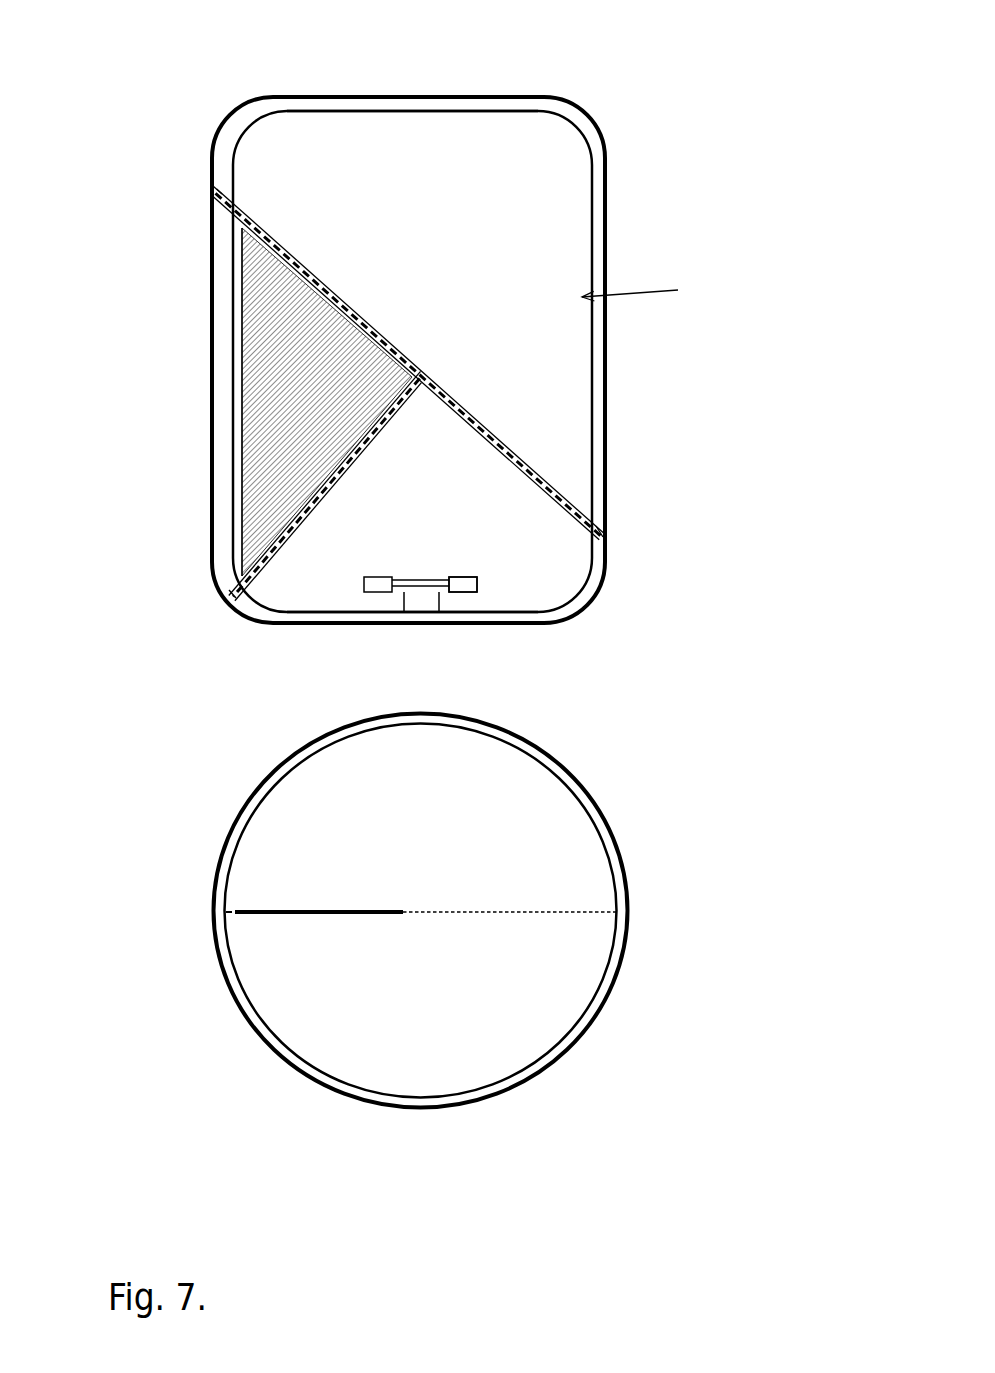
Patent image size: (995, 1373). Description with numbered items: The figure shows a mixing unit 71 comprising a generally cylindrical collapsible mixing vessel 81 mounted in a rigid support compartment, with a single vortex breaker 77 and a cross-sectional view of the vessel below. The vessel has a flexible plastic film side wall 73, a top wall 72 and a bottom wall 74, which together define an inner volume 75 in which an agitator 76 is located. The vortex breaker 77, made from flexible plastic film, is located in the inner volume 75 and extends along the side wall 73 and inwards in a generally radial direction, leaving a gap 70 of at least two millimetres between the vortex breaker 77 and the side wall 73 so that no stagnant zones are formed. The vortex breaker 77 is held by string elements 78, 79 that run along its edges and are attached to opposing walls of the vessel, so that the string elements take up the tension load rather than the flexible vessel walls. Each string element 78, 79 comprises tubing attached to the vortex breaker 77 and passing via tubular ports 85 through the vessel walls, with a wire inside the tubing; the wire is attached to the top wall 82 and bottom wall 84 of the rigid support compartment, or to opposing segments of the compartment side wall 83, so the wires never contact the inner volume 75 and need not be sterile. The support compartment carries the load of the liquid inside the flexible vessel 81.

The gap 70 is at (240, 356).
The mixing unit 71 is at (188, 660).
The top wall 72 is at (437, 110).
The side wall 73 is at (233, 308).
The bottom wall 74 is at (352, 613).
The inner volume 75 is at (437, 283).
The agitator 76 is at (450, 592).
The vortex breaker 77 is at (280, 385).
The string element 78 is at (505, 425).
The string element 79 is at (337, 487).
The collapsible mixing vessel 81 is at (656, 292).
The top wall of rigid support compartment 82 is at (322, 96).
The side wall of rigid support compartment 83 is at (211, 266).
The bottom wall of rigid support compartment 84 is at (432, 625).
The tubular port 85 is at (232, 198).